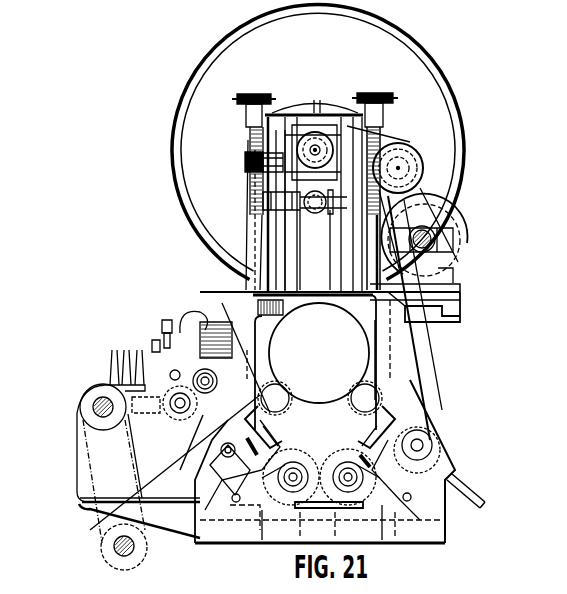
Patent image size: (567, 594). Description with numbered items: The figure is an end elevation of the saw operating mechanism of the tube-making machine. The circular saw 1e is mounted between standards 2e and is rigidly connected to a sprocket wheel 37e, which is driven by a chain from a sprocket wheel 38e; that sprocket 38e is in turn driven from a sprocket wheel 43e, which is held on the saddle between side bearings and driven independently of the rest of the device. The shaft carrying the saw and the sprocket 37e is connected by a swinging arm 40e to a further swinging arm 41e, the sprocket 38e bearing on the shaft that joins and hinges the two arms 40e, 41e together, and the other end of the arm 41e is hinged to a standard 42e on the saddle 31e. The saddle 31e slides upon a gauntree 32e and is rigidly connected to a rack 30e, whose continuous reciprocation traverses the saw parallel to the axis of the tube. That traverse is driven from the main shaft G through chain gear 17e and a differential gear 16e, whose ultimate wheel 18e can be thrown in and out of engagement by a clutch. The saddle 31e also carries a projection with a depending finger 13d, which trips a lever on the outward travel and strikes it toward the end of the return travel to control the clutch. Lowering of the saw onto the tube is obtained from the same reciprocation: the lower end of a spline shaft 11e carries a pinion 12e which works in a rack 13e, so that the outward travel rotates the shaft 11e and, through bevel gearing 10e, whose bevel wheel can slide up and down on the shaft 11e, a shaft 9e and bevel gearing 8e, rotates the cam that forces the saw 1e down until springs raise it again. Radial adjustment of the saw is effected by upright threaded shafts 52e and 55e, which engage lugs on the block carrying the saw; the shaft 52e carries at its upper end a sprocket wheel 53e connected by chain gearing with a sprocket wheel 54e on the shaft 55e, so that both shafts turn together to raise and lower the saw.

The saw 1e is at (318, 142).
The standards 2e is at (290, 139).
The bevel gearing 8e is at (330, 213).
The shaft 9e is at (294, 207).
The bevel gearing 10e is at (300, 199).
The spline shaft 11e is at (277, 258).
The pinion 12e is at (286, 303).
The rack 13e is at (262, 316).
The depending finger 13d is at (165, 335).
The differential gear 16e is at (113, 473).
The chain gear 17e is at (90, 418).
The ultimate wheel 18e is at (186, 418).
The rack 30e is at (206, 319).
The saddle 31e is at (458, 314).
The gauntree 32e is at (397, 353).
The sprocket wheel 37e is at (317, 144).
The sprocket wheel 38e is at (414, 166).
The swinging arm 40e is at (423, 126).
The swinging arm 41e is at (422, 218).
The standard 42e is at (427, 282).
The sprocket wheel 43e is at (462, 248).
The upright threaded shaft 52e is at (365, 132).
The sprocket wheel 53e is at (399, 77).
The sprocket wheel 54e is at (263, 77).
The threaded shaft 55e is at (247, 154).
The main shaft G is at (110, 553).